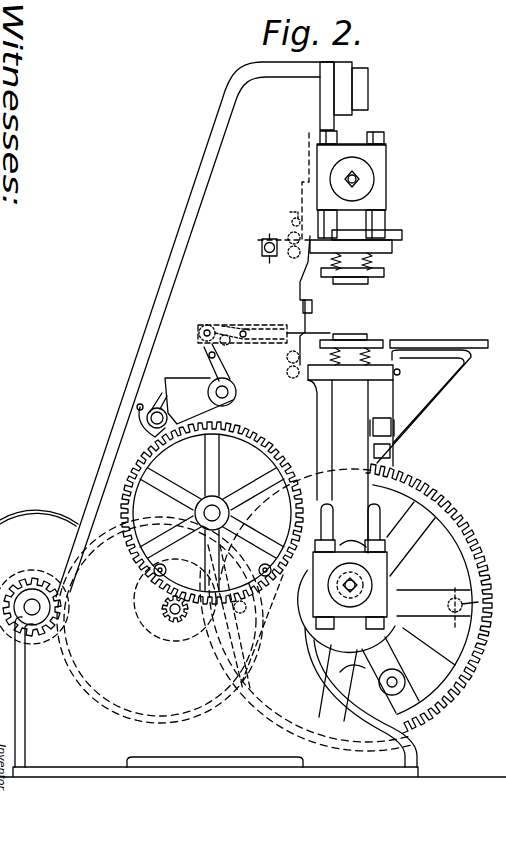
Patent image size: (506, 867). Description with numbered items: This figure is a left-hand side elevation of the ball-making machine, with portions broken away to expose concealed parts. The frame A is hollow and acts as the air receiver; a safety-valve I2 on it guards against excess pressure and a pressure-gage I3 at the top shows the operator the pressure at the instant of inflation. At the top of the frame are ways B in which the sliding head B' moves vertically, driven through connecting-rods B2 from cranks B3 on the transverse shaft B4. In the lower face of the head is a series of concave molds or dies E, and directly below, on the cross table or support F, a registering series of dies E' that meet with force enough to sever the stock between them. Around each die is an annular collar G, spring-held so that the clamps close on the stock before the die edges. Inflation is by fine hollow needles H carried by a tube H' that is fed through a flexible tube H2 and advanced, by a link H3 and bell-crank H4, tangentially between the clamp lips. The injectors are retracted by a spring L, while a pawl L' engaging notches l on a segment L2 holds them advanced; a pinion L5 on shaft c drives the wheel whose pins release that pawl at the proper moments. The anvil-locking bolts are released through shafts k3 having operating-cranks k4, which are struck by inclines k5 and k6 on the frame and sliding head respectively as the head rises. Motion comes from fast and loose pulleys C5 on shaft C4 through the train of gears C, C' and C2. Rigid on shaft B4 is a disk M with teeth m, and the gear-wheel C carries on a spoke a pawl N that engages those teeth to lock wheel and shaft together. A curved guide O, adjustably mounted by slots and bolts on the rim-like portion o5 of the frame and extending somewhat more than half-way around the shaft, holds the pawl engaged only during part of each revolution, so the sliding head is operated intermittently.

The frame A is at (253, 419).
The pressure-gage I3 is at (362, 89).
The ways B is at (365, 131).
The sliding head B' is at (364, 199).
The connecting-rods B2 is at (330, 233).
The cranks B3 is at (352, 586).
The shaft B4 is at (387, 607).
The concave molds or dies E is at (352, 278).
The dies E' is at (357, 340).
The cross table or support F is at (393, 385).
The annular collars G is at (358, 338).
The hollow needles H is at (264, 329).
The flexible tube H2 is at (240, 327).
The link H3 is at (213, 326).
The bell-crank H4 is at (207, 366).
The tube H' is at (240, 323).
The safety-valve I2 is at (385, 424).
The shafts k3 is at (270, 263).
The operating-cranks k4 is at (289, 357).
The incline k5 is at (298, 310).
The incline k6 is at (302, 267).
The spring L is at (222, 375).
The segment L2 is at (199, 401).
The pawl L' is at (129, 408).
The pinion L5 is at (173, 620).
The notches l is at (163, 396).
The gear-wheel C is at (356, 604).
The gear C' is at (175, 629).
The gear C2 is at (120, 712).
The shaft C4 is at (32, 599).
The fast and loose pulleys C5 is at (39, 505).
The shaft c is at (163, 611).
The disk M is at (426, 646).
The teeth m is at (353, 608).
The pawl N is at (383, 684).
The curved guide O is at (351, 660).
The rim-like portion o5 is at (454, 706).